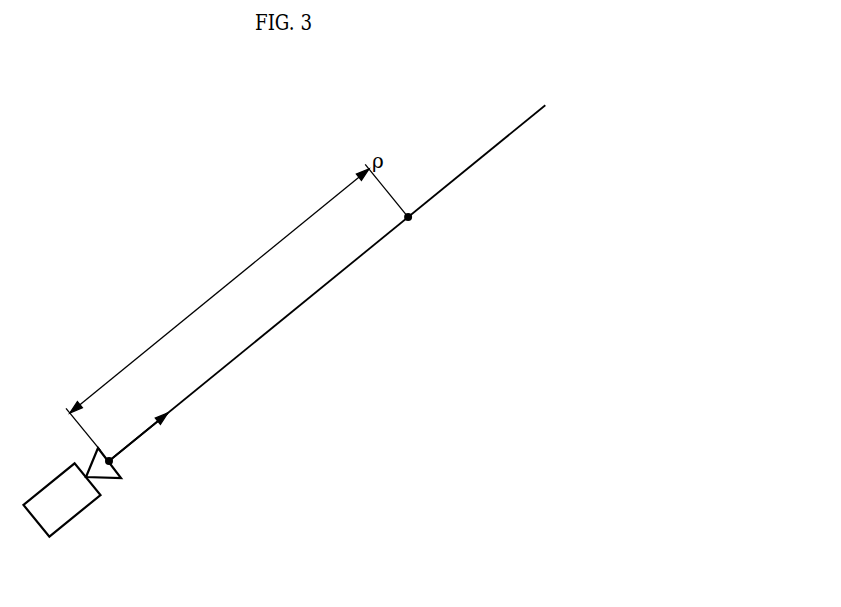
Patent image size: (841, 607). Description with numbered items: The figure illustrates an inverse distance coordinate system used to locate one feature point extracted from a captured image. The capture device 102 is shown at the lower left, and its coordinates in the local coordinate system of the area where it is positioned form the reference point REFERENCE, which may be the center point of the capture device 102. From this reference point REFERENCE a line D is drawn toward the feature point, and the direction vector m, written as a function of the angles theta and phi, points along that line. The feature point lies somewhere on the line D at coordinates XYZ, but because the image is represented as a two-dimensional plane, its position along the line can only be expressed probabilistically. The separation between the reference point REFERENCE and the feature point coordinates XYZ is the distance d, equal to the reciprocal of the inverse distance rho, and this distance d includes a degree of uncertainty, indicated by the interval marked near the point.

The capture device 102 is at (68, 507).
The line D is at (478, 160).
The distance 1/ρ d is at (186, 277).
The direction vector m(θ, φ) m is at (178, 436).
The coordinates (X, Y, Z) of the feature point XYZ is at (408, 222).
The reference point (x, y, z) REFERENCE is at (112, 462).